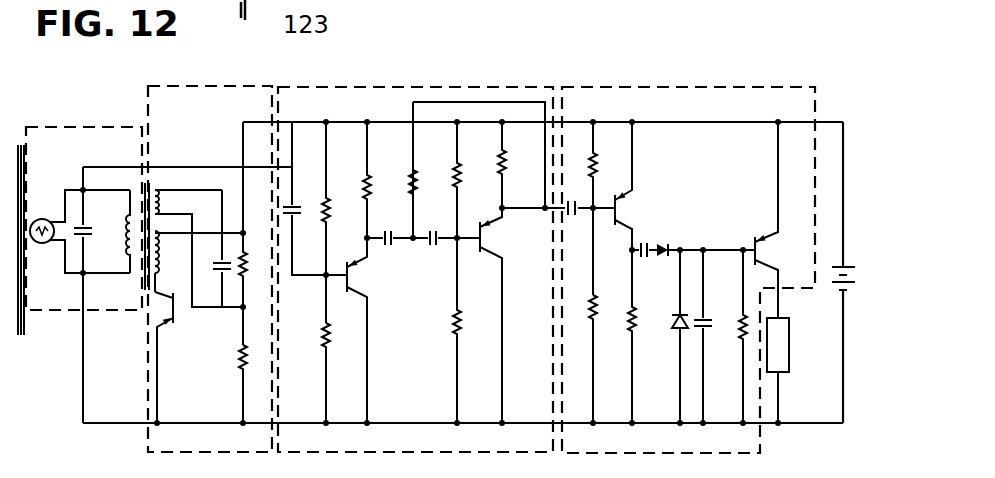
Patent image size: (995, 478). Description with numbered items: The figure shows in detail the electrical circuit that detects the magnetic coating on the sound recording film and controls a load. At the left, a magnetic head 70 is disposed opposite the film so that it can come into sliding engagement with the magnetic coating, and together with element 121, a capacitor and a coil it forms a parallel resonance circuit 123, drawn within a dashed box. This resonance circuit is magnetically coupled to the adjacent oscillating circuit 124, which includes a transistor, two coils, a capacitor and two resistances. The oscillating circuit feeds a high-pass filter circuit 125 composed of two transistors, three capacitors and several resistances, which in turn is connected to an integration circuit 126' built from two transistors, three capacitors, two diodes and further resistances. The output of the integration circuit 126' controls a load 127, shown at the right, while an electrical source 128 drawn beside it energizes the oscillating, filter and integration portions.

The magnetic head 70 is at (37, 220).
The magnetic coating detection element 121 is at (24, 327).
The parallel resonance circuit 123 is at (87, 125).
The oscillating circuit 124 is at (215, 84).
The high-pass filter circuit 125 is at (392, 86).
The integration circuit 126' is at (688, 244).
The load 127 is at (786, 348).
The power source battery 128 is at (832, 277).